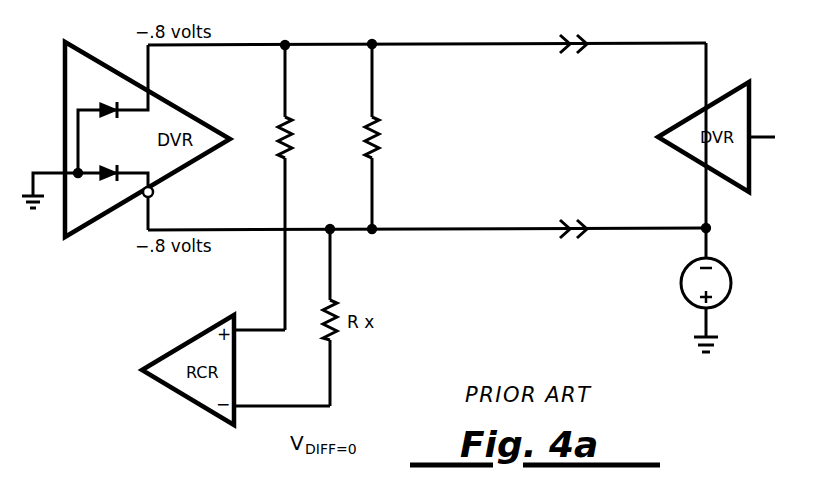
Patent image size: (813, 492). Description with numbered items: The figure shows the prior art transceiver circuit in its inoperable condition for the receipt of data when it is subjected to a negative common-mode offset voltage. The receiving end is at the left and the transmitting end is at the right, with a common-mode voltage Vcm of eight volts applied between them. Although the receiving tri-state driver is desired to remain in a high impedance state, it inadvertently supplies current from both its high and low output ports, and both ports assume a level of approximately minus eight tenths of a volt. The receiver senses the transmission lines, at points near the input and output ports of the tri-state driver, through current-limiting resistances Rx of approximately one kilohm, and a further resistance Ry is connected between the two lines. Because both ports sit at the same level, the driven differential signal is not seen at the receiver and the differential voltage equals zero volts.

The current-limiting resistance Rx is at (304, 187).
The resistor Ry is at (387, 136).
The common-mode voltage Vcm is at (739, 305).